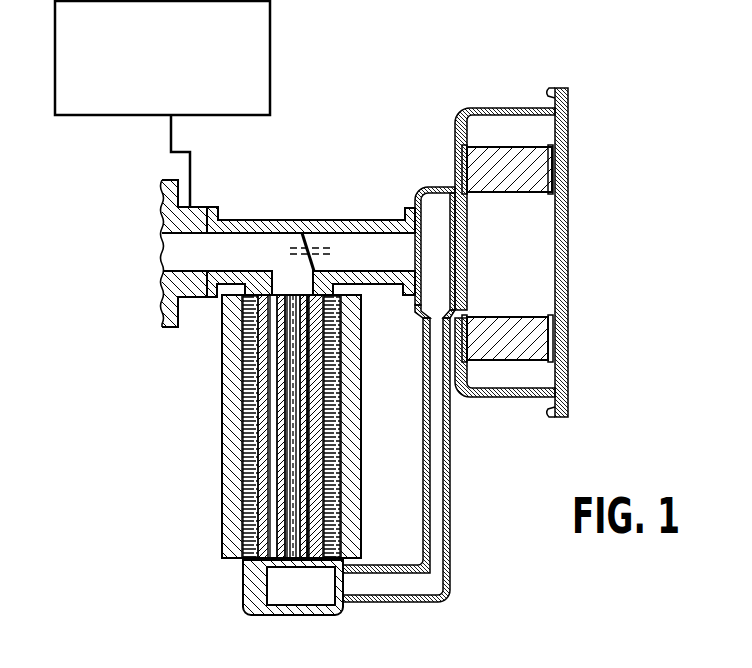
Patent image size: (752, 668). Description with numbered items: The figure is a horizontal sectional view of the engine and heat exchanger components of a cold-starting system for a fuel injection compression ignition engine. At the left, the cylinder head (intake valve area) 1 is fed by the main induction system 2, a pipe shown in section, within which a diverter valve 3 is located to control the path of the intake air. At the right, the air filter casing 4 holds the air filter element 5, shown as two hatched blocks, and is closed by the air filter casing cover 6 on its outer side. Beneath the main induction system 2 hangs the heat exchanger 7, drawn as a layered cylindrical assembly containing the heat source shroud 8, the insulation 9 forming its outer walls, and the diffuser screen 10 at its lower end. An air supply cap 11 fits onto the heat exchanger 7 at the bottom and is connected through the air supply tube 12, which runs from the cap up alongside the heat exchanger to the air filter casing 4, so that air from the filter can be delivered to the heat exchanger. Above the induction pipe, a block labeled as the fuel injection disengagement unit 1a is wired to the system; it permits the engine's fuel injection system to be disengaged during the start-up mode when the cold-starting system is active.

The fuel injection disengagement unit 1a is at (272, 47).
The cylinder head (intake valve area) 1 is at (166, 281).
The main induction system 2 is at (242, 220).
The diverter valve 3 is at (321, 230).
The air filter casing 4 is at (432, 192).
The air filter element 5 is at (513, 178).
The air filter casing cover 6 is at (558, 88).
The heat exchanger 7 is at (263, 453).
The heat source shroud 8 is at (340, 470).
The insulation 9 is at (353, 372).
The diffuser screen 10 is at (253, 563).
The air supply cap 11 is at (305, 616).
The air supply tube 12 is at (451, 452).